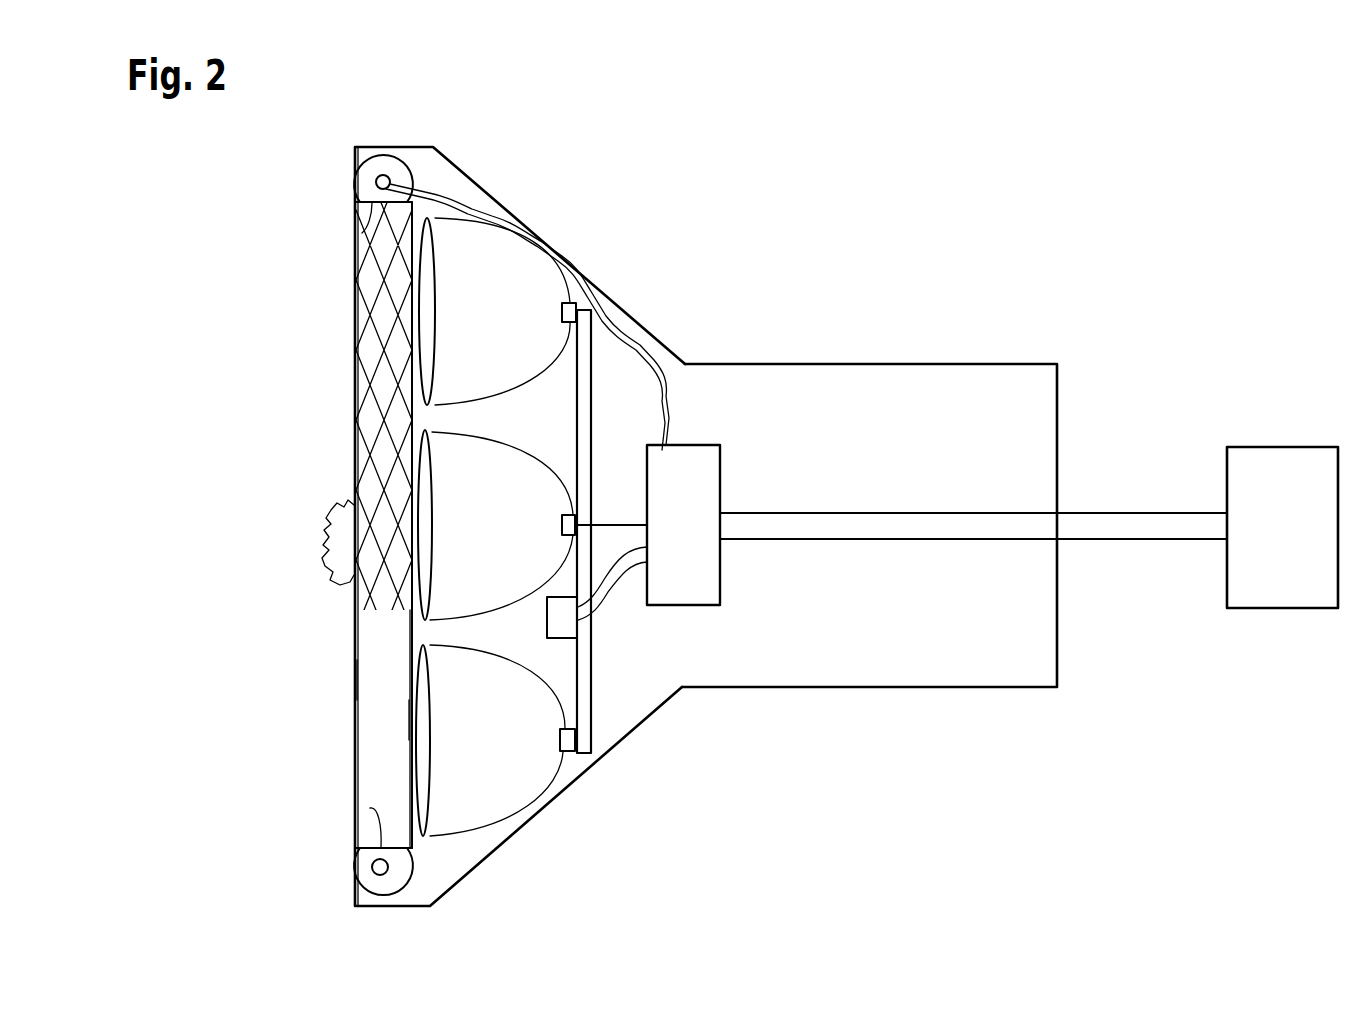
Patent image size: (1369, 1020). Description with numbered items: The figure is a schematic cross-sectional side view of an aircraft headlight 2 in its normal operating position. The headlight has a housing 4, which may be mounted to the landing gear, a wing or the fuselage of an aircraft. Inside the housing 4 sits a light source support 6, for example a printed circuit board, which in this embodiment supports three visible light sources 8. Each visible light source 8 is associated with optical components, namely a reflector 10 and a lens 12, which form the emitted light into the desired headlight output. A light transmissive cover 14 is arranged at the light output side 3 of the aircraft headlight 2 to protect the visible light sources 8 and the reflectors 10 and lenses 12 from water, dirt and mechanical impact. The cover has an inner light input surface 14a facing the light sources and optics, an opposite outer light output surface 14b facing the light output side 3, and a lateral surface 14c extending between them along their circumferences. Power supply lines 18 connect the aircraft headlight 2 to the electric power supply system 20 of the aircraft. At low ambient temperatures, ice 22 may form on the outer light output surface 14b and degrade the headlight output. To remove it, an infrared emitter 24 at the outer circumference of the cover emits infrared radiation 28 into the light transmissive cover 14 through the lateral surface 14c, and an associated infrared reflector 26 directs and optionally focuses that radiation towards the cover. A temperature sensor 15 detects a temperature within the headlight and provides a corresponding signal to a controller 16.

The aircraft headlight 2 is at (706, 196).
The light output side 3 is at (230, 280).
The housing 4 is at (495, 182).
The light source support 6 is at (597, 356).
The visible light source 8 is at (575, 301).
The reflector 10 is at (553, 457).
The lens 12 is at (527, 229).
The light transmissive cover 14 is at (383, 758).
The inner light input surface 14a is at (411, 717).
The outer light output surface 14b is at (356, 677).
The lateral surface 14c is at (362, 233).
The temperature sensor 15 is at (560, 625).
The controller 16 is at (685, 573).
The power supply lines 18 is at (1113, 492).
The electric power supply system 20 is at (1283, 480).
The ice 22 is at (310, 565).
The infrared emitter 24 is at (360, 198).
The infrared reflector 26 is at (356, 149).
The infrared radiation 28 is at (372, 296).